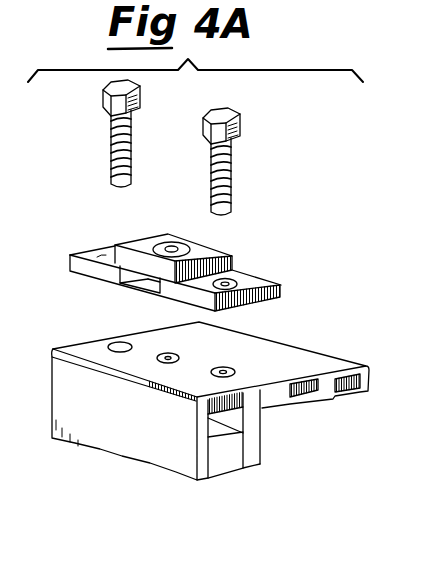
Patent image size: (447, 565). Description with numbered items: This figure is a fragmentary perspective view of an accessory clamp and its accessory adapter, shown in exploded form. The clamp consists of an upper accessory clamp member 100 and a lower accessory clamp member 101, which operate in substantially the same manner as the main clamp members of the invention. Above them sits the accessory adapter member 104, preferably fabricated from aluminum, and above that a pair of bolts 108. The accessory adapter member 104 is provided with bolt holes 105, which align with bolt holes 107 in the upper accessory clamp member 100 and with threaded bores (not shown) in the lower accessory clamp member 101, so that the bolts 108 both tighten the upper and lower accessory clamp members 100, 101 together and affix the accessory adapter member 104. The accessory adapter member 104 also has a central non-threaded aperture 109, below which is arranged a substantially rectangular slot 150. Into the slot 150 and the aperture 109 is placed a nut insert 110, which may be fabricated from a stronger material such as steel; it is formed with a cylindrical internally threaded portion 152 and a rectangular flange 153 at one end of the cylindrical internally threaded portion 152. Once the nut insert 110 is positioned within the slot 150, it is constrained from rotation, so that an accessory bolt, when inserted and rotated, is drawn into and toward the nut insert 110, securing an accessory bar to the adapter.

The upper accessory clamp member 100 is at (281, 386).
The lower accessory clamp member 101 is at (232, 460).
The accessory adapter member 104 is at (262, 297).
The bolt holes 105 is at (233, 282).
The bolt holes 107 is at (120, 345).
The bolts 108 is at (104, 99).
The central non-threaded aperture 109 is at (157, 239).
The nut insert 110 is at (119, 290).
The rectangular slot 150 is at (142, 279).
The cylindrical internally threaded portion 152 is at (200, 245).
The rectangular flange 153 is at (150, 290).